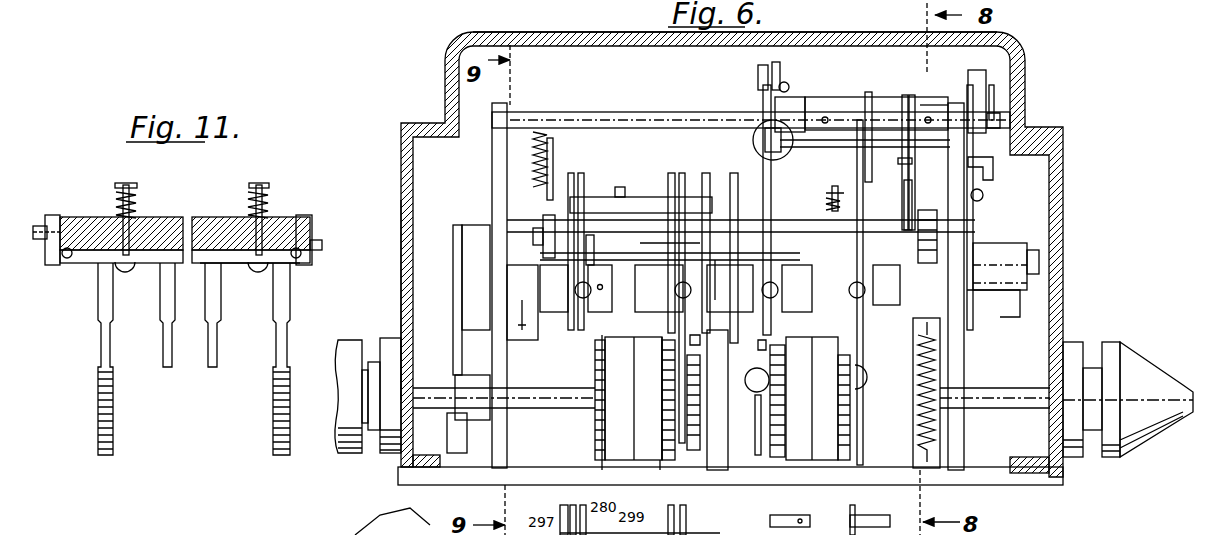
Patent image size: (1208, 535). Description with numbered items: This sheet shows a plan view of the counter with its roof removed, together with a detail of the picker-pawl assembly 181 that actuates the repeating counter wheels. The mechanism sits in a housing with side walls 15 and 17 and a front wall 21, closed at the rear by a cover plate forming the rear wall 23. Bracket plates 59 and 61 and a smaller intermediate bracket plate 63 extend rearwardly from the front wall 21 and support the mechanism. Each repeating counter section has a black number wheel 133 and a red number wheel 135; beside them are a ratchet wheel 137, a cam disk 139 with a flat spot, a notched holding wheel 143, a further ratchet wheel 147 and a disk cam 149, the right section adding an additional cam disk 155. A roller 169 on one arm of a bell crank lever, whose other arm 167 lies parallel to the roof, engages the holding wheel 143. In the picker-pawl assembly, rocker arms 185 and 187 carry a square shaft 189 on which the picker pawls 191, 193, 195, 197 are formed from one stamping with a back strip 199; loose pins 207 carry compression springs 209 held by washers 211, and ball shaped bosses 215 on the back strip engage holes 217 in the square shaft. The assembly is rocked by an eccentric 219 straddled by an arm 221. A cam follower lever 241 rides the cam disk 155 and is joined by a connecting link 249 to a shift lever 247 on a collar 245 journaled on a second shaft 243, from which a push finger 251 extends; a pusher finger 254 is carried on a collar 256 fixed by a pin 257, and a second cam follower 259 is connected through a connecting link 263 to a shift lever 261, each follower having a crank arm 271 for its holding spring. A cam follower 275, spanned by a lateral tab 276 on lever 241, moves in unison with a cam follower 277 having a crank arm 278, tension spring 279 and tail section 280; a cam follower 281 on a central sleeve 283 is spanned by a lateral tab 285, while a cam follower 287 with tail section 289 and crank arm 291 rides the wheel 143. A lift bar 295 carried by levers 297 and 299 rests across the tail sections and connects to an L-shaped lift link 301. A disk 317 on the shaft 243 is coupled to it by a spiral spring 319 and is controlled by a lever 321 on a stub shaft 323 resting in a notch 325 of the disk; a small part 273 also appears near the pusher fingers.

In FIG. 6, the side wall 15 is at (402, 268).
In FIG. 6, the side wall 17 is at (1064, 200).
In FIG. 6, the front wall 21 is at (921, 490).
In FIG. 6, the rear wall 23 is at (580, 32).
In FIG. 6, the bracket plate 59 is at (492, 183).
In FIG. 6, the bracket plate 61 is at (964, 340).
In FIG. 6, the intermediate bracket plate 63 is at (732, 470).
In FIG. 6, the black number wheel 133 is at (620, 460).
In FIG. 6, the red number wheel 135 is at (658, 460).
In FIG. 6, the ratchet wheel 137 is at (662, 472).
In FIG. 6, the cam disk 139 is at (670, 460).
In FIG. 6, the holding wheel 143 is at (753, 410).
In FIG. 11, the ratchet wheel 147 is at (100, 408).
In FIG. 6, the ratchet wheel 147 is at (594, 460).
In FIG. 6, the disk cam 149 is at (578, 478).
In FIG. 6, the additional cam disk 155 is at (788, 460).
In FIG. 6, the bell crank lever arm 167 is at (703, 181).
In FIG. 6, the roller 169 is at (690, 340).
In FIG. 11, the bar 181 is at (196, 198).
In FIG. 11, the rocker arm 185 is at (43, 250).
In FIG. 6, the rocker arm 185 is at (561, 221).
In FIG. 6, the rocker arm 187 is at (937, 238).
In FIG. 11, the square shaft 189 is at (136, 194).
In FIG. 6, the square shaft 189 is at (775, 222).
In FIG. 11, the picker pawl 191 is at (101, 302).
In FIG. 6, the picker pawl 191 is at (603, 340).
In FIG. 11, the picker pawl 193 is at (168, 341).
In FIG. 11, the picker pawl 195 is at (210, 336).
In FIG. 11, the picker pawl 197 is at (290, 305).
In FIG. 6, the picker pawl 197 is at (843, 340).
In FIG. 11, the back strip 199 is at (228, 268).
In FIG. 11, the loose pin 207 is at (255, 184).
In FIG. 11, the compression spring 209 is at (270, 203).
In FIG. 11, the washer 211 is at (263, 187).
In FIG. 6, the washer 211 is at (836, 192).
In FIG. 11, the ball shaped boss 215 is at (68, 259).
In FIG. 11, the hole 217 is at (70, 222).
In FIG. 6, the eccentric 219 is at (448, 439).
In FIG. 6, the arm 221 is at (453, 329).
In FIG. 6, the cam follower lever 241 is at (863, 202).
In FIG. 6, the second shaft 243 is at (620, 120).
In FIG. 6, the collar 245 is at (868, 95).
In FIG. 6, the shift lever 247 is at (862, 146).
In FIG. 6, the connecting link 249 is at (860, 110).
In FIG. 6, the push finger 251 is at (903, 100).
In FIG. 6, the pusher finger 254 is at (913, 186).
In FIG. 6, the collar 256 is at (912, 106).
In FIG. 6, the pin 257 is at (930, 116).
In FIG. 6, the second cam follower 259 is at (771, 183).
In FIG. 6, the shift lever 261 is at (782, 79).
In FIG. 6, the connecting link 263 is at (775, 107).
In FIG. 6, the crank arm 271 is at (805, 288).
In FIG. 6, the collar 273 is at (912, 161).
In FIG. 6, the cam follower 275 is at (874, 337).
In FIG. 6, the lateral tab 276 is at (866, 373).
In FIG. 6, the cam follower 277 is at (580, 365).
In FIG. 6, the crank arm 278 is at (580, 285).
In FIG. 6, the tension spring 279 is at (580, 293).
In FIG. 6, the tail section 280 is at (592, 252).
In FIG. 6, the cam follower 281 is at (768, 420).
In FIG. 6, the central sleeve 283 is at (718, 292).
In FIG. 6, the lateral tab 285 is at (745, 390).
In FIG. 6, the cam follower 287 is at (684, 356).
In FIG. 6, the tail section 289 is at (679, 243).
In FIG. 6, the crank arm 291 is at (678, 290).
In FIG. 6, the lift bar 295 is at (605, 200).
In FIG. 6, the lever 297 is at (586, 180).
In FIG. 6, the lever 299 is at (668, 181).
In FIG. 6, the L-shape lift link 301 is at (552, 160).
In FIG. 6, the disk 317 is at (972, 80).
In FIG. 6, the spiral spring 319 is at (995, 99).
In FIG. 6, the lever 321 is at (975, 228).
In FIG. 6, the stub shaft 323 is at (1045, 263).
In FIG. 6, the notch 325 is at (985, 147).